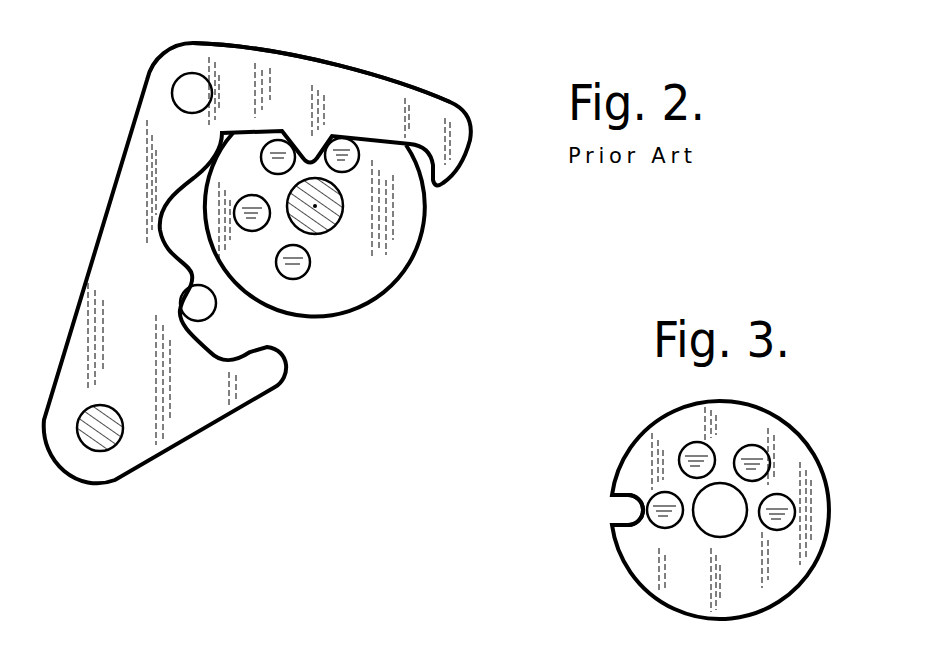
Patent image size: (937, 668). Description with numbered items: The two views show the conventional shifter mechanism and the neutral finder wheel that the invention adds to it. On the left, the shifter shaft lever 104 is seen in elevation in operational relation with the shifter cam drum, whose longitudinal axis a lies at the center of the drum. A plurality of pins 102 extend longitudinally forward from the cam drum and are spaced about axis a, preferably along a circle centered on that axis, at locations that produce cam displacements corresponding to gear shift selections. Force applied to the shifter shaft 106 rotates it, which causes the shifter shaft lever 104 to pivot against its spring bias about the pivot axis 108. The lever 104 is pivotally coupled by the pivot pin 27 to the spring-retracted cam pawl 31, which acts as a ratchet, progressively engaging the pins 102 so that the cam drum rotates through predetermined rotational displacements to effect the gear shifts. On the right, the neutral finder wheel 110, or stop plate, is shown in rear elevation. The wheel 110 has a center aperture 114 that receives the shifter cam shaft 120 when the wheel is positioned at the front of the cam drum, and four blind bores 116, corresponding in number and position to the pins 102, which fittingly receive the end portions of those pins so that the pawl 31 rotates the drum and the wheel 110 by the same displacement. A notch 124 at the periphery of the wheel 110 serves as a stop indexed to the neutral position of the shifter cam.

In FIG. 2, the pivot pin 27 is at (178, 94).
In FIG. 2, the cam pawl 31 is at (408, 82).
In FIG. 2, the pins 102 is at (280, 147).
In FIG. 2, the shifter shaft lever 104 is at (104, 204).
In FIG. 2, the shifter shaft 106 is at (86, 446).
In FIG. 2, the pivot axis 108 is at (112, 436).
In FIG. 2, the shifter cam shaft 120 is at (318, 236).
In FIG. 2, the longitudinal axis a is at (316, 207).
In FIG. 3, the neutral finder wheel 110 is at (815, 427).
In FIG. 3, the center aperture 114 is at (684, 498).
In FIG. 3, the blind bores 116 is at (713, 452).
In FIG. 3, the notch 124 is at (614, 503).